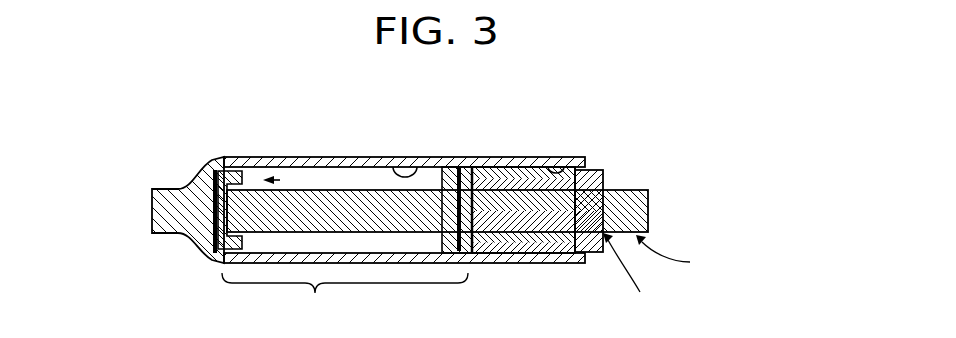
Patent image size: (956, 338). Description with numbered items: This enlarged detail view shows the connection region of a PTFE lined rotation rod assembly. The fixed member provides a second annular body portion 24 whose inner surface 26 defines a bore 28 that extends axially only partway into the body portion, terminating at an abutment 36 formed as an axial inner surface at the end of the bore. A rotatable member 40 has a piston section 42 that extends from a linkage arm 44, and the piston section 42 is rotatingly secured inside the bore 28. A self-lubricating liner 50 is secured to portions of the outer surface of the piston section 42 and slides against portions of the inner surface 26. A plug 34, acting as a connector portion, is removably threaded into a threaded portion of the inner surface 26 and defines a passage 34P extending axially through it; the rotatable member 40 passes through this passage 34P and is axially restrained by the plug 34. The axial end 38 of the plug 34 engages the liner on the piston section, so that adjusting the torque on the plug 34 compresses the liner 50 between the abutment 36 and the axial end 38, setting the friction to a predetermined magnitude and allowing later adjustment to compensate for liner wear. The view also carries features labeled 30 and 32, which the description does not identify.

The second annular body portion 24 is at (347, 157).
The inner surface 26 is at (420, 167).
The bore 28 is at (280, 180).
The protrusion 30 is at (558, 168).
The sleeve 32 is at (518, 161).
The plug 34 is at (605, 179).
The passage 34P is at (646, 275).
The abutment 36 is at (240, 243).
The axial end of plug 38 is at (455, 186).
The rotatable member 40 is at (677, 255).
The piston section 42 is at (345, 300).
The linkage arm 44 is at (630, 194).
The self-lubricating liner 50 is at (204, 165).